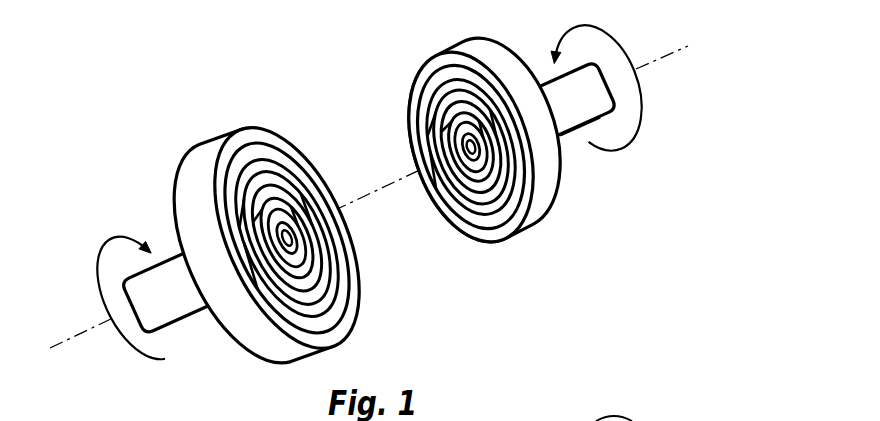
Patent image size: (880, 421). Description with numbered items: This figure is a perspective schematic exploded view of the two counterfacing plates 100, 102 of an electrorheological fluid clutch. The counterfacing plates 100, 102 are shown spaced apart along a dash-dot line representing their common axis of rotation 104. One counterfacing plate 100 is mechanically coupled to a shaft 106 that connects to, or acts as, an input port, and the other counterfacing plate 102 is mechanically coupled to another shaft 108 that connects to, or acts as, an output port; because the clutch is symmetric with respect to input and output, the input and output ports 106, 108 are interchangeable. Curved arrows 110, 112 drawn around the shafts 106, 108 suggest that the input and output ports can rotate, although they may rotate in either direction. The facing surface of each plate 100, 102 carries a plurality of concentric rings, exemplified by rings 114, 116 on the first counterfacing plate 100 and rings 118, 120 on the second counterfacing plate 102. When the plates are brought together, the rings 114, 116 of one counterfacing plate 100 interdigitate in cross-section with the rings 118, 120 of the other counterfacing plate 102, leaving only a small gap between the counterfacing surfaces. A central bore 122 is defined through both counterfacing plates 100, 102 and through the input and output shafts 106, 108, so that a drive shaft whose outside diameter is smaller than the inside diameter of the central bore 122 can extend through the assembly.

The counterfacing plate 100 is at (283, 231).
The counterfacing plate 102 is at (492, 170).
The common axis of rotation 104 is at (636, 68).
The shaft 106 is at (169, 256).
The shaft 108 is at (591, 140).
The arrow 110 is at (188, 325).
The arrow 112 is at (642, 130).
The ring 114 is at (274, 157).
The ring 116 is at (301, 197).
The ring 118 is at (446, 198).
The ring 120 is at (474, 233).
The central bore 122 is at (350, 291).